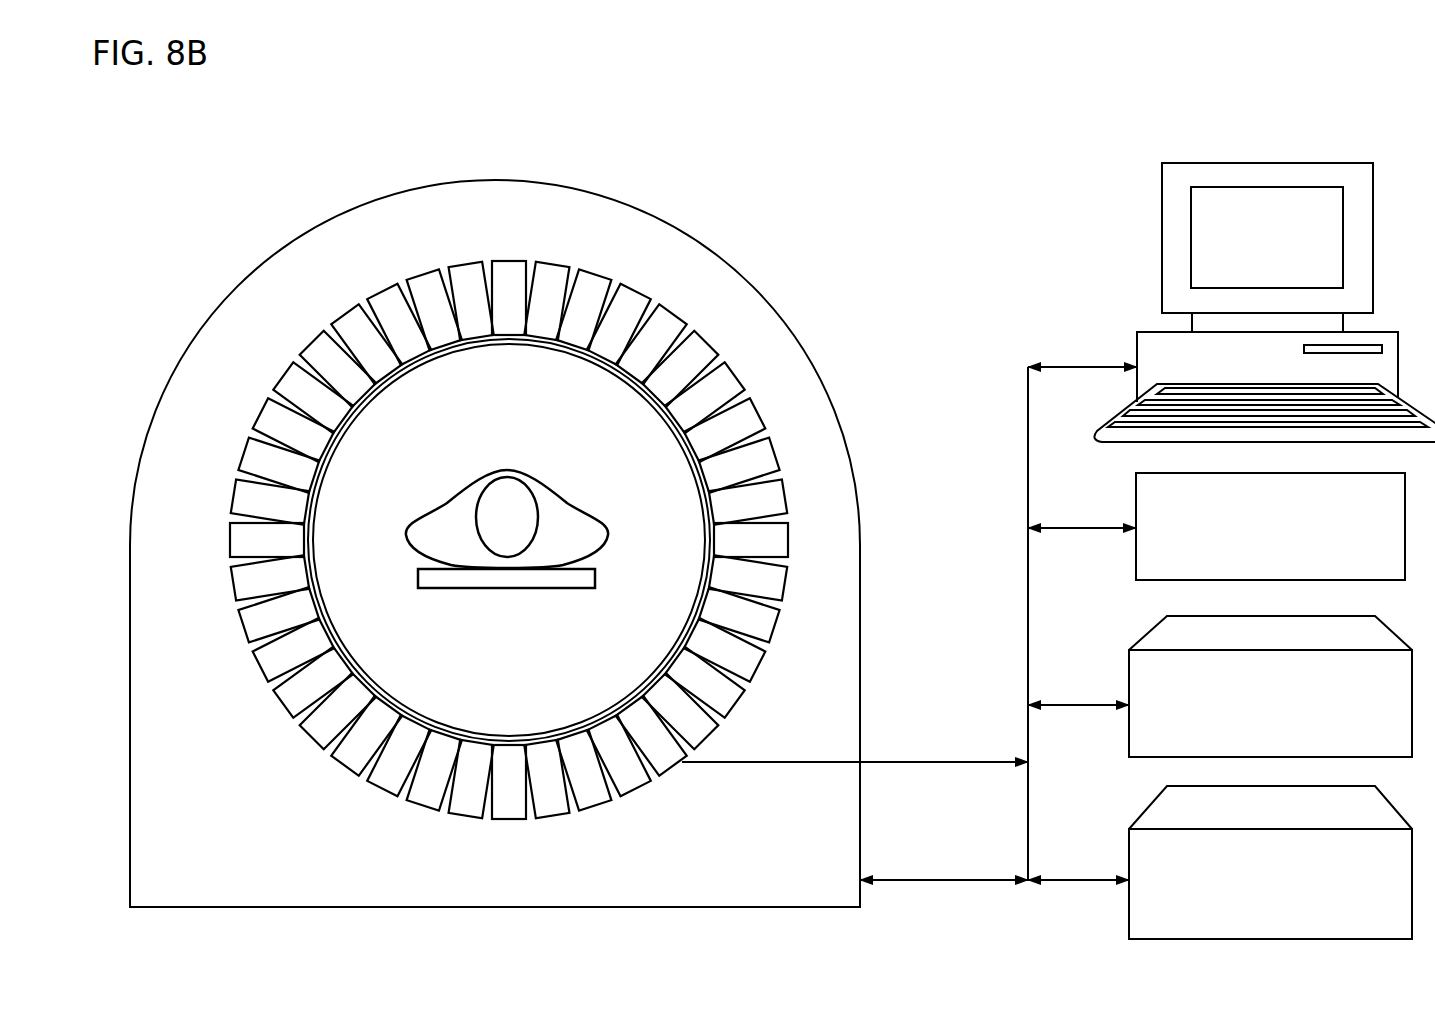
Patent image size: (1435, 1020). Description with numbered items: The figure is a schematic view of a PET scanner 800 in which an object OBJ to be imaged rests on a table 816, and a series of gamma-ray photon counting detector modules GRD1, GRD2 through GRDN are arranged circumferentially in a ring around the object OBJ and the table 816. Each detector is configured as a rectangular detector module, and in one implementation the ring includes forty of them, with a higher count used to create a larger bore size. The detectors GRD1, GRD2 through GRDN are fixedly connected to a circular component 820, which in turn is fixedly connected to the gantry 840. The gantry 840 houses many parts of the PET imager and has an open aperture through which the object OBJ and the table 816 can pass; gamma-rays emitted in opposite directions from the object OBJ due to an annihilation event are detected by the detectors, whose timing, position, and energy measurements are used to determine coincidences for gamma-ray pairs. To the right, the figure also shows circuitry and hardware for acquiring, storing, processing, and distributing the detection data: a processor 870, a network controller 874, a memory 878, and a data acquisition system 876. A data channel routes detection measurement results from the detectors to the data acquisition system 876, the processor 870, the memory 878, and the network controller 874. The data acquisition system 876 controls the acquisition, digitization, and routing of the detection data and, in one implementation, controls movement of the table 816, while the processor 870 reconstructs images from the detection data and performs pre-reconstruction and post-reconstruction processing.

The PET scanner 800 is at (932, 103).
The gantry 840 is at (775, 307).
The circular component 820 is at (493, 472).
The table 816 is at (473, 583).
The processor 870 is at (1264, 302).
The network controller 874 is at (1270, 526).
The memory 878 is at (1270, 686).
The data acquisition system 876 is at (1270, 862).
The gamma-ray detector GRD1 is at (513, 263).
The gamma-ray detector GRD2 is at (557, 267).
The gamma-ray detector GRDN is at (460, 267).
The object OBJ is at (478, 478).